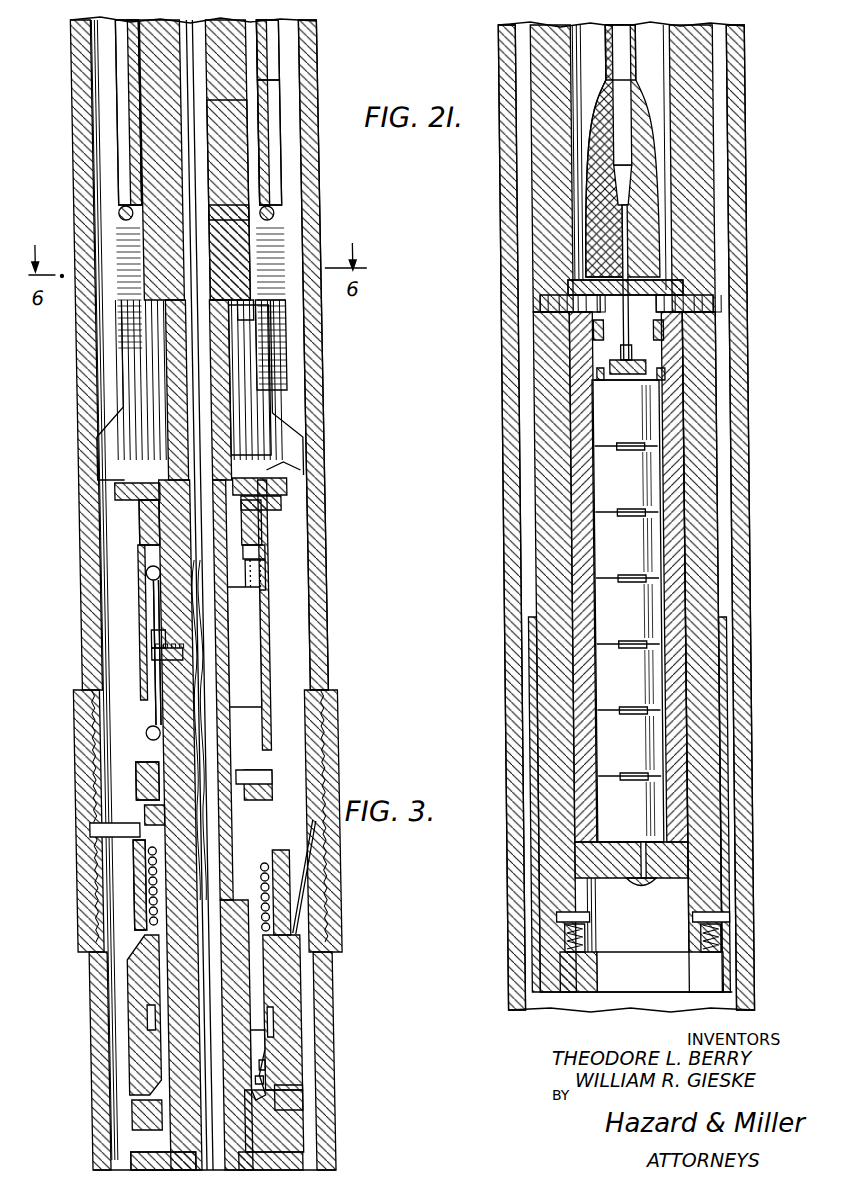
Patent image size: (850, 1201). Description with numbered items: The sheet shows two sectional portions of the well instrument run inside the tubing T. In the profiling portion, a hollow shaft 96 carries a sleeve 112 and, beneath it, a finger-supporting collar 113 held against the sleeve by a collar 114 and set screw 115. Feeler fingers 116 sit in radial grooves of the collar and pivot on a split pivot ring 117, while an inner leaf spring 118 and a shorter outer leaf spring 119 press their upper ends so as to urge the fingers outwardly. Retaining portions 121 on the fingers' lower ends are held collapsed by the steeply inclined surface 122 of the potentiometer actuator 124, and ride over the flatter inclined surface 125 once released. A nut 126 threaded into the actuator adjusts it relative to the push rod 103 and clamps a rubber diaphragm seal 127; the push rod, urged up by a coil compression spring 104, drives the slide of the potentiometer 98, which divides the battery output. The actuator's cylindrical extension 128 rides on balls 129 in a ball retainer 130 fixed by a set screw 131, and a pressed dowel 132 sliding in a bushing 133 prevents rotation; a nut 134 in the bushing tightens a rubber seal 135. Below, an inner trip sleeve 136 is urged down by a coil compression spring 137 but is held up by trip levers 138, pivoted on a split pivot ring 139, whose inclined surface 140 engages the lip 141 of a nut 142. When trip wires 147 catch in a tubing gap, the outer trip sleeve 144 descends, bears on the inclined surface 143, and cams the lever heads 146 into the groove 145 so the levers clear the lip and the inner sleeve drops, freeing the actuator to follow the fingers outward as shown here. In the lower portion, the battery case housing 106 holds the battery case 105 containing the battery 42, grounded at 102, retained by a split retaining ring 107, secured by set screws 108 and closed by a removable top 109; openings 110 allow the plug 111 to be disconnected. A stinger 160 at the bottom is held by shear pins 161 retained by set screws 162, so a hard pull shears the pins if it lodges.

In FIG. 3, the tubing T is at (313, 525).
In FIG. 2I, the tubing T is at (500, 533).
In FIG. 2I, the battery 42 is at (640, 474).
In FIG. 3, the hollow shaft 96 is at (210, 162).
In FIG. 3, the potentiometer 98 is at (238, 648).
In FIG. 2I, the ground 102 is at (645, 886).
In FIG. 3, the push rod 103 is at (252, 580).
In FIG. 3, the coil compression spring 104 is at (260, 558).
In FIG. 2I, the battery case 105 is at (663, 418).
In FIG. 2I, the battery case housing 106 is at (700, 553).
In FIG. 2I, the bulkhead 107 is at (577, 882).
In FIG. 2I, the set screws 108 is at (548, 307).
In FIG. 2I, the removable top 109 is at (570, 290).
In FIG. 2I, the openings 110 is at (650, 44).
In FIG. 2I, the plug 111 is at (605, 58).
In FIG. 3, the sleeve 112 is at (141, 82).
In FIG. 3, the finger-supporting collar 113 is at (236, 235).
In FIG. 3, the collar 114 is at (239, 333).
In FIG. 3, the set screw 115 is at (242, 310).
In FIG. 3, the feeler fingers 116 is at (263, 378).
In FIG. 3, the split pivot ring 117 is at (116, 213).
In FIG. 3, the inner leaf spring 118 is at (263, 87).
In FIG. 3, the outer leaf spring 119 is at (261, 38).
In FIG. 3, the retaining portions 121 is at (280, 462).
In FIG. 3, the steeply inclined surface 122 is at (129, 492).
In FIG. 3, the potentiometer actuator 124 is at (281, 476).
In FIG. 3, the flatter inclined surface 125 is at (110, 467).
In FIG. 3, the nut 126 is at (132, 527).
In FIG. 3, the rubber diaphragm seal 127 is at (274, 497).
In FIG. 3, the cylindrical extension 128 is at (131, 645).
In FIG. 3, the balls 129 is at (135, 573).
In FIG. 3, the ball retainer 130 is at (141, 612).
In FIG. 3, the set screw 131 is at (143, 662).
In FIG. 3, the pressed dowel 132 is at (228, 764).
In FIG. 3, the bushing 133 is at (133, 815).
In FIG. 3, the nut 134 is at (85, 832).
In FIG. 3, the rubber seal 135 is at (136, 796).
In FIG. 3, the inner trip sleeve 136 is at (124, 887).
In FIG. 3, the coil compression spring 137 is at (274, 910).
In FIG. 3, the trip levers 138 is at (251, 1084).
In FIG. 3, the split pivot ring 139 is at (251, 1067).
In FIG. 3, the inclined surface 140 is at (280, 1122).
In FIG. 3, the lip 141 is at (130, 1103).
In FIG. 3, the nut 142 is at (119, 1163).
In FIG. 3, the inclined surface 143 is at (265, 1098).
In FIG. 3, the outer trip sleeve 144 is at (261, 972).
In FIG. 3, the groove 145 is at (265, 1013).
In FIG. 3, the heads 146 is at (256, 1043).
In FIG. 3, the trip wires 147 is at (261, 878).
In FIG. 2I, the stinger 160 is at (720, 678).
In FIG. 2I, the shear pins 161 is at (578, 917).
In FIG. 2I, the set screws 162 is at (557, 950).